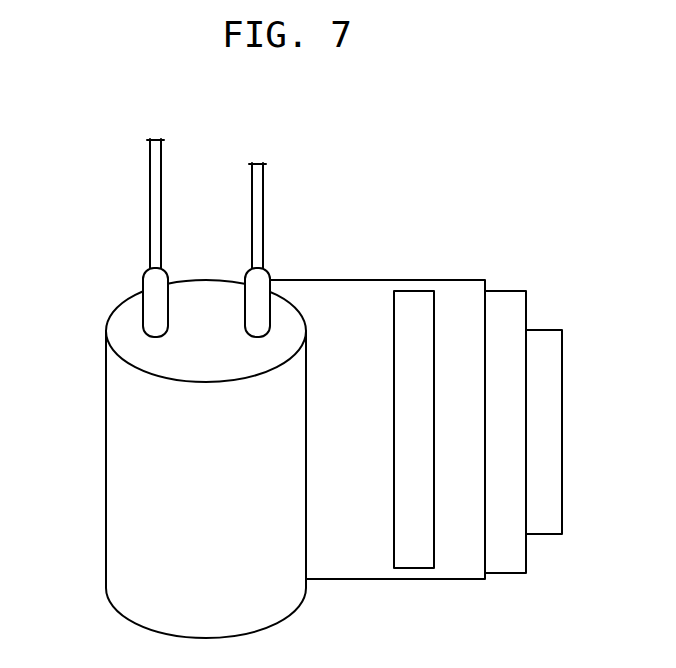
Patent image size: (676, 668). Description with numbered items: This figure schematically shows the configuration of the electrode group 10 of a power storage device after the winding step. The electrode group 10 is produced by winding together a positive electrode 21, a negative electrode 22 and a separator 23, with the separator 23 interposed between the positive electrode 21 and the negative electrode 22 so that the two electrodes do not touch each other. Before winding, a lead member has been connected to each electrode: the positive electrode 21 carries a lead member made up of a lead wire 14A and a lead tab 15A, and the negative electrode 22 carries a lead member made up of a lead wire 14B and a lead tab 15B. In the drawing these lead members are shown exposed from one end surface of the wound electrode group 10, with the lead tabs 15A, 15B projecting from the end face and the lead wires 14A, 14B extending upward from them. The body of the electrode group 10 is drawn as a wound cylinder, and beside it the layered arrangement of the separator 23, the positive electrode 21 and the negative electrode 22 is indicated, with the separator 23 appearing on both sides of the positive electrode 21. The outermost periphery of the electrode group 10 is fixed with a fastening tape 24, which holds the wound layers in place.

The electrode group 10 is at (390, 146).
The lead wire 14A is at (153, 179).
The lead wire 14B is at (262, 170).
The lead tab 15A is at (153, 287).
The lead tab 15B is at (262, 288).
The positive electrode 21 is at (421, 548).
The negative electrode 22 is at (507, 565).
The separator 23 is at (360, 548).
The fastening tape 24 is at (543, 522).